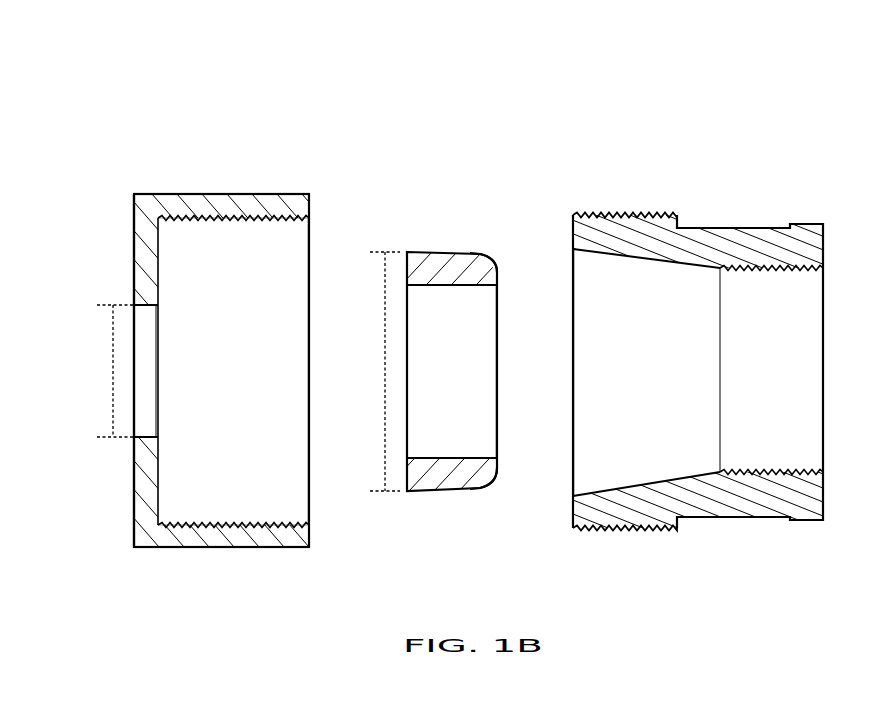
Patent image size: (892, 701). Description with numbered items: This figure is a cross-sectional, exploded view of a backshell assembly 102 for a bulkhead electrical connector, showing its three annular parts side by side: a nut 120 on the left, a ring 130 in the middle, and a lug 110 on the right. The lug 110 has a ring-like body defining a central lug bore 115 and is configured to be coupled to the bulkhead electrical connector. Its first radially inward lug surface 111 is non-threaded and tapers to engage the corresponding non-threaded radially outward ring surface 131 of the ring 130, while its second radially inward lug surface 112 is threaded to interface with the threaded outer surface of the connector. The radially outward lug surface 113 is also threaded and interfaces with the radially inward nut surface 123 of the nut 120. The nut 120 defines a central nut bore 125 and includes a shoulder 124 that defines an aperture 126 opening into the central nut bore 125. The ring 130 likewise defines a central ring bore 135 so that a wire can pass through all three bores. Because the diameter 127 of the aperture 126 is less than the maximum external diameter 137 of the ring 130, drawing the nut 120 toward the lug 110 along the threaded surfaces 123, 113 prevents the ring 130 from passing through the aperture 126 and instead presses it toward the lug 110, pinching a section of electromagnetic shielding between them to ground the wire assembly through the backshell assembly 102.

The backshell assembly 102 is at (115, 86).
The lug 110 is at (742, 216).
The first radially inward lug surface 111 is at (631, 258).
The second radially inward lug surface 112 is at (776, 270).
The radially outward lug surface 113 is at (603, 213).
The central lug bore 115 is at (714, 377).
The nut 120 is at (174, 184).
The radially inward nut surface 123 is at (250, 222).
The shoulder 124 is at (140, 248).
The central nut bore 125 is at (247, 377).
The aperture 126 is at (152, 408).
The diameter 127 is at (112, 370).
The ring 130 is at (444, 240).
The radially outward ring surface 131 is at (468, 254).
The central ring bore 135 is at (472, 377).
The maximum external diameter 137 is at (384, 365).